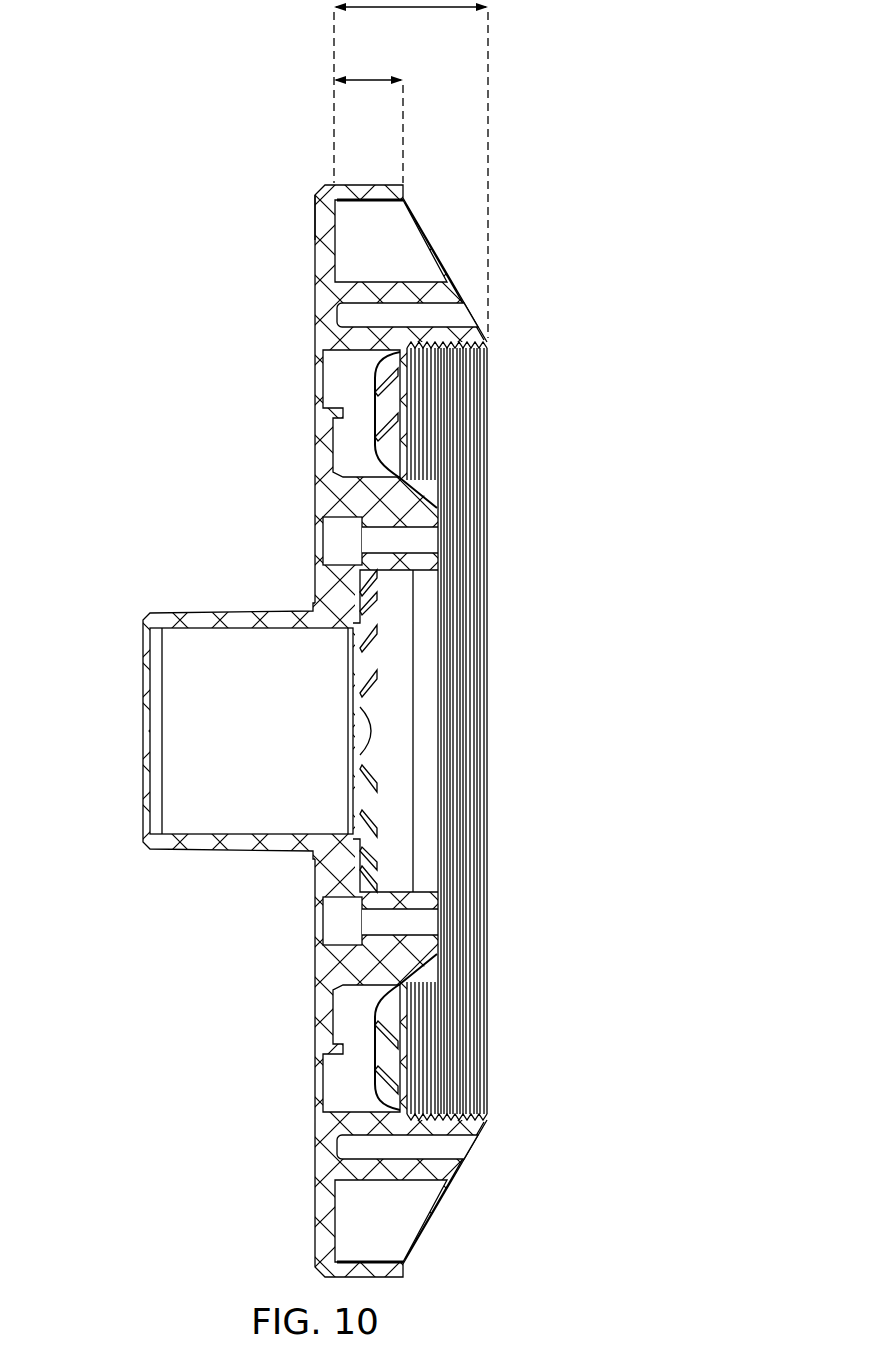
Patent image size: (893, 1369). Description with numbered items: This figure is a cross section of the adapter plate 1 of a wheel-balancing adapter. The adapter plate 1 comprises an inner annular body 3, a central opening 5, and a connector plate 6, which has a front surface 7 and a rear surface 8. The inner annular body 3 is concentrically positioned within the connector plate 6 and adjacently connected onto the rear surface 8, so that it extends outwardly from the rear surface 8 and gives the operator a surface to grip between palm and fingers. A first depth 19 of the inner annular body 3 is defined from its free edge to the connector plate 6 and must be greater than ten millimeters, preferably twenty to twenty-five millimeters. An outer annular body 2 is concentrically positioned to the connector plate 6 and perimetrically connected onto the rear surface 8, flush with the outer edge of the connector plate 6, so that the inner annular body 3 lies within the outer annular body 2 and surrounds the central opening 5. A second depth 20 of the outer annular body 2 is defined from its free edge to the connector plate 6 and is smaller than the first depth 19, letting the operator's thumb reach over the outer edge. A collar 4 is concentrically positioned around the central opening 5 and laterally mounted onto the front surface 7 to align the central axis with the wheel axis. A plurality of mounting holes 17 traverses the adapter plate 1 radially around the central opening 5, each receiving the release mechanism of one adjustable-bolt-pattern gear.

The adapter plate 1 is at (185, 226).
The outer annular body 2 is at (348, 188).
The inner annular body 3 is at (488, 1125).
The collar 4 is at (178, 613).
The central opening 5 is at (189, 755).
The connector plate 6 is at (320, 258).
The front surface 7 is at (315, 223).
The rear surface 8 is at (330, 220).
The plurality of mounting holes 17 is at (332, 376).
The first depth 19 is at (463, 8).
The second depth 20 is at (362, 80).